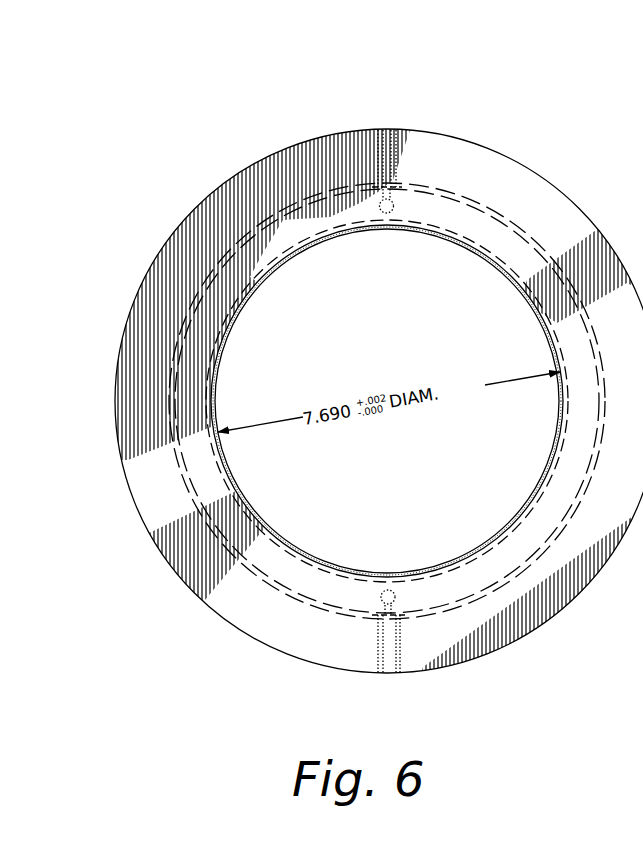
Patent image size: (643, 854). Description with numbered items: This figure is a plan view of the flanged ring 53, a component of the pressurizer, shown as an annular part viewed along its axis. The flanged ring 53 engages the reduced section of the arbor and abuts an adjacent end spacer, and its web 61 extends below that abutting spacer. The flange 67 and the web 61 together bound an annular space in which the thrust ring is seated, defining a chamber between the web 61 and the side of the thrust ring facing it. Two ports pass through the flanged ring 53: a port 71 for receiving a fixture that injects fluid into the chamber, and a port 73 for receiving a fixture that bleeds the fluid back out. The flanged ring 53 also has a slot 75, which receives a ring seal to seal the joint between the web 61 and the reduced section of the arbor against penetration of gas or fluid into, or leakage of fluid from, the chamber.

The flanged ring 53 is at (232, 633).
The web 61 is at (502, 157).
The flange 67 is at (248, 166).
The port 71 is at (384, 128).
The port 73 is at (388, 673).
The slot 75 is at (476, 251).